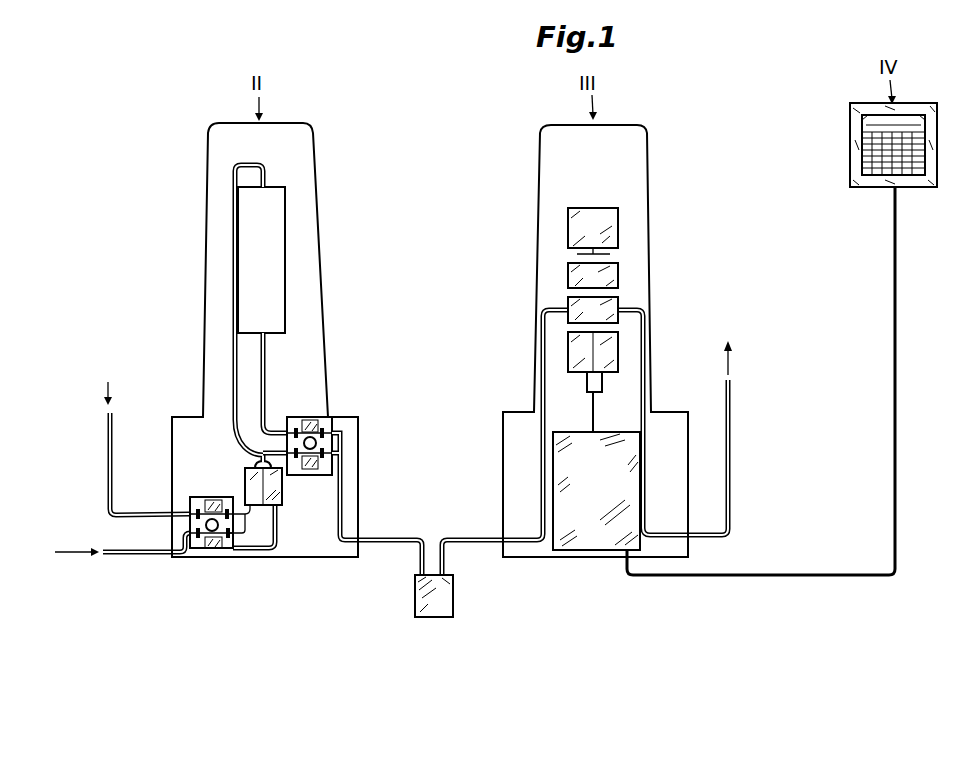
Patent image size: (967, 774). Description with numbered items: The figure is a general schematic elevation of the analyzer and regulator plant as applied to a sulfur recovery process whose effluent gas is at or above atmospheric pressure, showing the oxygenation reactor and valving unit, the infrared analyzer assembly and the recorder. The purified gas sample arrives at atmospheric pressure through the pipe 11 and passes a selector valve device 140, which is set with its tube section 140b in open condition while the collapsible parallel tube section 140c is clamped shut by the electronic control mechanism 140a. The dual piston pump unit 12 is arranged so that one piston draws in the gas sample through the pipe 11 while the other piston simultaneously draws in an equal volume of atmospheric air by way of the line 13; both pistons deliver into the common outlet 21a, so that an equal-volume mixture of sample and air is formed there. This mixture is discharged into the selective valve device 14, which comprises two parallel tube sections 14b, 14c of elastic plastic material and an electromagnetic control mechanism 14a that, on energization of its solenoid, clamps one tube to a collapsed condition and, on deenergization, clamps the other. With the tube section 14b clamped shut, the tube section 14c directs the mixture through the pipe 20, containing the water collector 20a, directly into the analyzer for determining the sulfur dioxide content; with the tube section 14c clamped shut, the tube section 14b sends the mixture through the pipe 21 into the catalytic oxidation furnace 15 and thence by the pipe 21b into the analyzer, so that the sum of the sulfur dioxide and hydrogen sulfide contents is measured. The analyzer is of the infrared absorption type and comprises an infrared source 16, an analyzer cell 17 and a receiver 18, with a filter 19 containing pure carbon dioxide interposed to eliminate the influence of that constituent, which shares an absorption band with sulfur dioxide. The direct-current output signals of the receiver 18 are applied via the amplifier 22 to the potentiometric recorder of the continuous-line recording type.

The pipe 11 is at (113, 450).
The dual piston pump unit 12 is at (255, 482).
The line 13 is at (122, 557).
The selective valve device 14 is at (331, 421).
The electromagnetic control mechanism 14a is at (318, 443).
The tube section 14b is at (296, 417).
The tube section 14c is at (300, 472).
The catalytic oxidation furnace 15 is at (274, 232).
The infrared source 16 is at (611, 228).
The analyzer cell 17 is at (613, 303).
The receiver 18 is at (611, 353).
The filter 19 is at (612, 273).
The pipe 20 is at (400, 539).
The water collector 20a is at (450, 602).
The pipe 21 is at (233, 368).
The common outlet 21a is at (262, 452).
The pipe 21b is at (266, 363).
The amplifier 22 is at (580, 535).
The selector valve device 140 is at (188, 552).
The electronic control mechanism 140a is at (218, 525).
The tube section 140b is at (203, 499).
The collapsible parallel tube section 140c is at (201, 545).